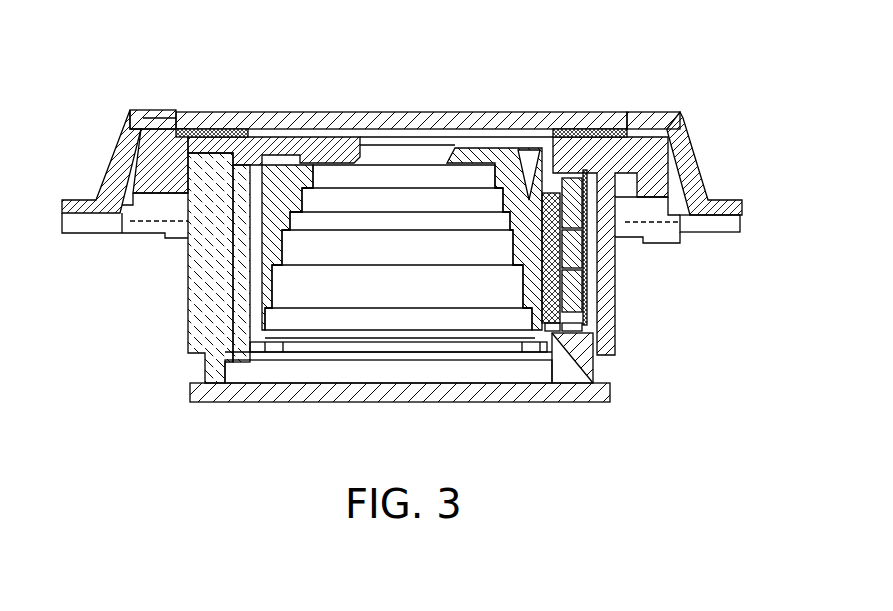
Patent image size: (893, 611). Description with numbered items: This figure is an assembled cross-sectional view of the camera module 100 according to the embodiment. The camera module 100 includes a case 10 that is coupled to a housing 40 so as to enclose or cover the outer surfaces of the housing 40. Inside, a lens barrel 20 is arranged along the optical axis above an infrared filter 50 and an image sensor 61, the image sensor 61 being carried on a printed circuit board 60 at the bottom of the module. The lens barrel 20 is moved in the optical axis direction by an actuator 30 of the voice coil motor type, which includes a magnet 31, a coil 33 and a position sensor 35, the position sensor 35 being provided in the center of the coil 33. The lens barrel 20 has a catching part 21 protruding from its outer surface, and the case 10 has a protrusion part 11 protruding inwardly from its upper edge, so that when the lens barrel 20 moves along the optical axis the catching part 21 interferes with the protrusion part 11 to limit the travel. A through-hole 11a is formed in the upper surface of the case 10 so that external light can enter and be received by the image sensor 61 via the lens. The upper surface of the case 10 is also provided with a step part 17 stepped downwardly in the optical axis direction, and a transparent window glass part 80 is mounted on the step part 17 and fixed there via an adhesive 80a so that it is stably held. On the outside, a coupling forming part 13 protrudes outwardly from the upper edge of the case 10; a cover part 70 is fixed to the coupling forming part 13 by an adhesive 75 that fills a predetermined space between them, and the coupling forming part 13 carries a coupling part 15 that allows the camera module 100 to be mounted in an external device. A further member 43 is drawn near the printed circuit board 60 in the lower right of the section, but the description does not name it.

The camera module 100 is at (424, 34).
The case 10 is at (195, 268).
The protrusion part 11 is at (242, 147).
The through-hole 11a is at (535, 135).
The coupling forming part 13 is at (153, 147).
The coupling part 15 is at (645, 212).
The step part 17 is at (695, 165).
The lens barrel 20 is at (299, 150).
The catching part 21 is at (360, 150).
The actuator 30 is at (646, 271).
The magnet 31 is at (587, 313).
The coil 33 is at (587, 302).
The position sensor 35 is at (578, 262).
The housing 40 is at (215, 307).
The connection member 43 is at (556, 355).
The infrared filter 50 is at (338, 353).
The printed circuit board 60 is at (468, 395).
The image sensor 61 is at (423, 377).
The cover part 70 is at (714, 163).
The adhesive 75 is at (130, 113).
The window glass part 80 is at (477, 112).
The adhesive 80a is at (586, 112).